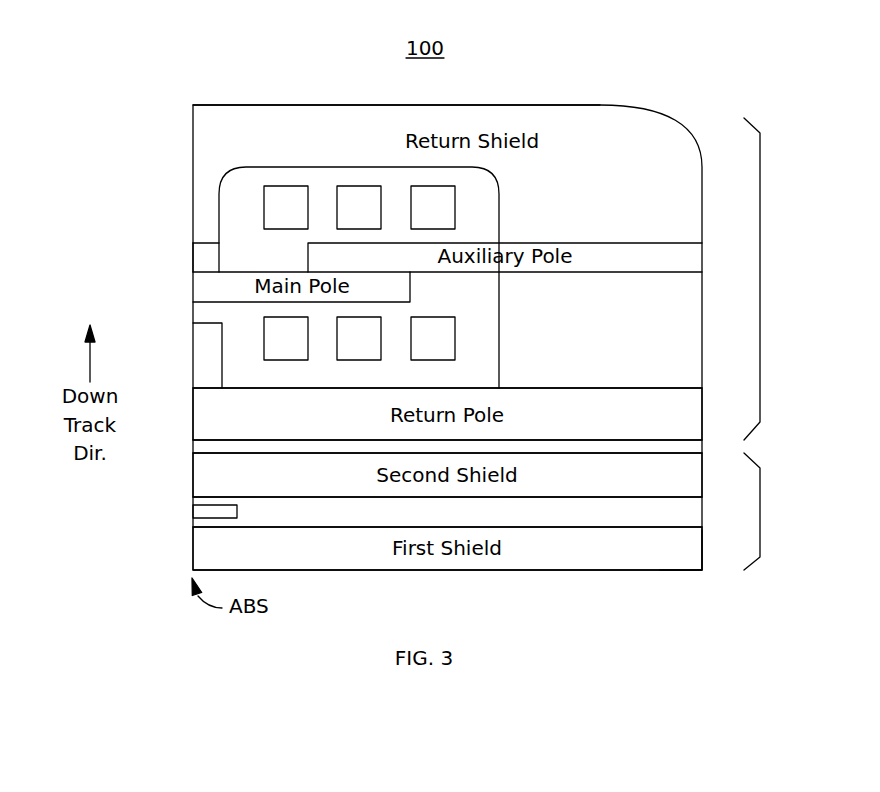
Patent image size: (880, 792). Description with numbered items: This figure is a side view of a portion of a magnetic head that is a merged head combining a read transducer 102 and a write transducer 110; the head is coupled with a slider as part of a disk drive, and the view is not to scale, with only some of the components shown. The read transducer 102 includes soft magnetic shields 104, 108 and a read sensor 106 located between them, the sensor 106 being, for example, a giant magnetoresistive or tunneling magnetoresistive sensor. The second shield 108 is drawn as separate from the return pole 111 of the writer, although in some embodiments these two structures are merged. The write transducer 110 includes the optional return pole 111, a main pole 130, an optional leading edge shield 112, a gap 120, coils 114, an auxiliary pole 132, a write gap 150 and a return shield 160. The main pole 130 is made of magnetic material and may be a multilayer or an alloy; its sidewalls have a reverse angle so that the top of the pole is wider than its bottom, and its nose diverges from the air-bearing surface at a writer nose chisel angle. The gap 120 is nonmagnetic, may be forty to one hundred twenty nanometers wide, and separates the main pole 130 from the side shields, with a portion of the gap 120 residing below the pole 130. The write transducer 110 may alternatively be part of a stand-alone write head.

The read transducer 102 is at (760, 512).
The soft magnetic shield 104 is at (702, 570).
The read sensor 106 is at (192, 510).
The second shield 108 is at (192, 483).
The write transducer 110 is at (760, 280).
The return pole 111 is at (192, 418).
The leading edge shield 112 is at (193, 367).
The coils 114 is at (472, 337).
The gap 120 is at (192, 307).
The main pole 130 is at (193, 288).
The auxiliary pole 132 is at (647, 243).
The write gap 150 is at (208, 242).
The return shield 160 is at (192, 187).